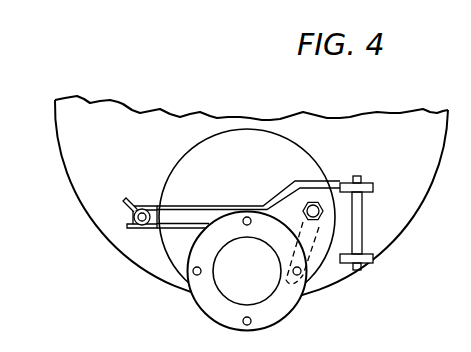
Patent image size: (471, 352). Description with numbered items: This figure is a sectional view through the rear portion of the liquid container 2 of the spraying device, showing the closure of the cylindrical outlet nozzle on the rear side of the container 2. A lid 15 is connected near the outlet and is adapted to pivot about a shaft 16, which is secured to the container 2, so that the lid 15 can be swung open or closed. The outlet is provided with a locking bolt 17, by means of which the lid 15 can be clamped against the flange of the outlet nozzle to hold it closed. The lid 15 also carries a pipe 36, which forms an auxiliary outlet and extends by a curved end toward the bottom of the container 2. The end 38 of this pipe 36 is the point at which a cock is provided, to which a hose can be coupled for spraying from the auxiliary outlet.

The liquid container 2 is at (62, 148).
The lid 15 is at (186, 155).
The shaft 16 is at (355, 176).
The locking bolt 17 is at (136, 229).
The pipe 36 is at (280, 280).
The end of the pipe 38 is at (298, 200).